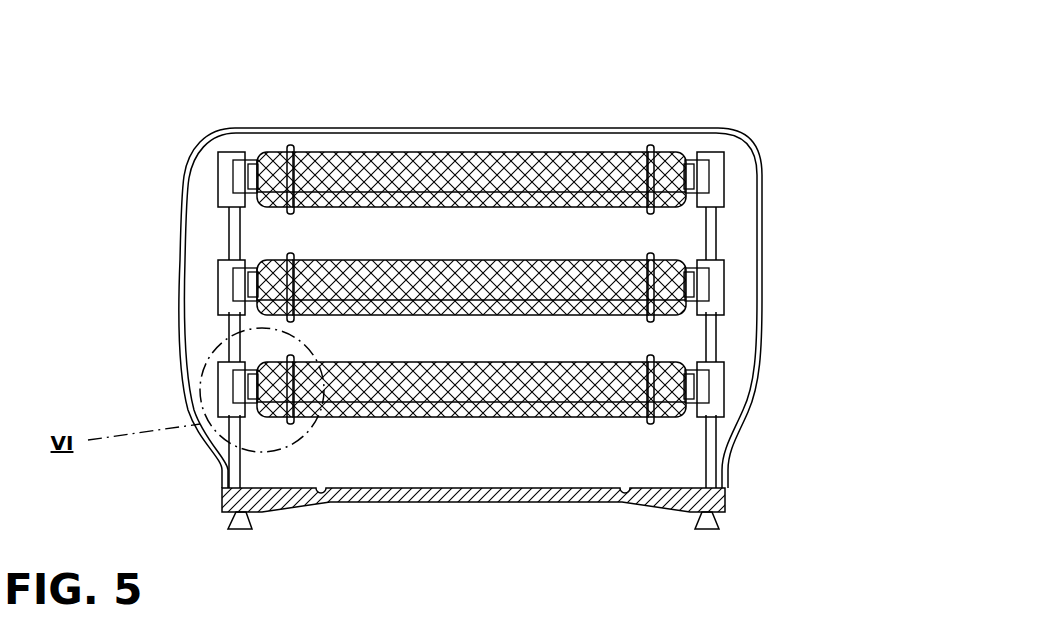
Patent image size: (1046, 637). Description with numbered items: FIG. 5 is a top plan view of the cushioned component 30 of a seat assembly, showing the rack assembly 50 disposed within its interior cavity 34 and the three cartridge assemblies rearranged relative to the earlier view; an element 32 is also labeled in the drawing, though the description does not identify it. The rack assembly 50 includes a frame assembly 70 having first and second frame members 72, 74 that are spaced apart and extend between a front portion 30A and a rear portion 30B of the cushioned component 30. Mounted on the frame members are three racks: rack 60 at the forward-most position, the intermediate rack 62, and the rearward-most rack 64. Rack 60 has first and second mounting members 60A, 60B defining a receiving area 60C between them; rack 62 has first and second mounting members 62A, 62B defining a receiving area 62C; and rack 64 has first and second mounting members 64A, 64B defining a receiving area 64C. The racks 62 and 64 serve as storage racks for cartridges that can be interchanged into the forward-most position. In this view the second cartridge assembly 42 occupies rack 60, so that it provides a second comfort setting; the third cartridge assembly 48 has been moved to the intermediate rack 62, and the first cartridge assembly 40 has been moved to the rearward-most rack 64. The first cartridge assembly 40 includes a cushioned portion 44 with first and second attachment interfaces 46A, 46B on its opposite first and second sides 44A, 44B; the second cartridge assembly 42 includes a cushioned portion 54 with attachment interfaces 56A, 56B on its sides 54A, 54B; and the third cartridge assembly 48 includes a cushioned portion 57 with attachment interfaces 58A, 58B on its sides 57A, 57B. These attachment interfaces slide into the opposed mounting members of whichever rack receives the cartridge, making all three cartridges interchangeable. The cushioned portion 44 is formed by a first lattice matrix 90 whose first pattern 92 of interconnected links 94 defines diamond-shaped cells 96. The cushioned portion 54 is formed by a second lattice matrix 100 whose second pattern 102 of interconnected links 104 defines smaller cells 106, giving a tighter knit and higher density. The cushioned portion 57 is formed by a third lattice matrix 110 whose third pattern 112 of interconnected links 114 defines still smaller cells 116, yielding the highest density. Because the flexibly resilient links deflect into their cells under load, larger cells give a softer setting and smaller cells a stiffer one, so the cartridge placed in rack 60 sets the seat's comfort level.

The cushioned component 30 is at (768, 125).
The front portion 30A is at (424, 128).
The rear portion 30B is at (392, 503).
The side wall 32 is at (766, 232).
The interior cavity 34 is at (445, 342).
The first cartridge assembly 40 is at (712, 356).
The second cartridge assembly 42 is at (622, 145).
The cushioned portion 44 is at (572, 362).
The first side 44A is at (232, 342).
The second side 44B is at (702, 348).
The first attachment interface 46A is at (222, 362).
The second attachment interface 46B is at (706, 352).
The third cartridge assembly 48 is at (708, 236).
The rack assembly 50 is at (744, 413).
The cushioned portion 54 is at (520, 152).
The first side 54A is at (270, 155).
The second side 54B is at (660, 152).
The first attachment interface 56A is at (248, 155).
The second attachment interface 56B is at (712, 152).
The cushioned portion 57 is at (595, 262).
The first side 57A is at (262, 262).
The second side 57B is at (680, 258).
The first attachment interface 58A is at (250, 262).
The second attachment interface 58B is at (690, 268).
The rack 60 is at (488, 127).
The first mounting member 60A is at (220, 178).
The second mounting member 60B is at (724, 177).
The receiving area 60C is at (500, 155).
The rack 62 is at (493, 236).
The first mounting member 62A is at (220, 285).
The second mounting member 62B is at (724, 282).
The receiving area 62C is at (528, 278).
The rack 64 is at (472, 356).
The first mounting member 64A is at (220, 388).
The second mounting member 64B is at (724, 390).
The receiving area 64C is at (482, 388).
The frame assembly 70 is at (218, 447).
The first frame member 72 is at (228, 452).
The second frame member 74 is at (718, 437).
The first lattice matrix 90 is at (427, 418).
The first pattern 92 is at (455, 416).
The interconnected links 94 is at (400, 404).
The cells 96 is at (556, 404).
The second lattice matrix 100 is at (606, 145).
The second pattern 102 is at (568, 150).
The interconnected links 104 is at (442, 155).
The cells 106 is at (372, 155).
The third lattice matrix 110 is at (453, 256).
The third pattern 112 is at (488, 258).
The interconnected links 114 is at (420, 258).
The cells 116 is at (380, 258).